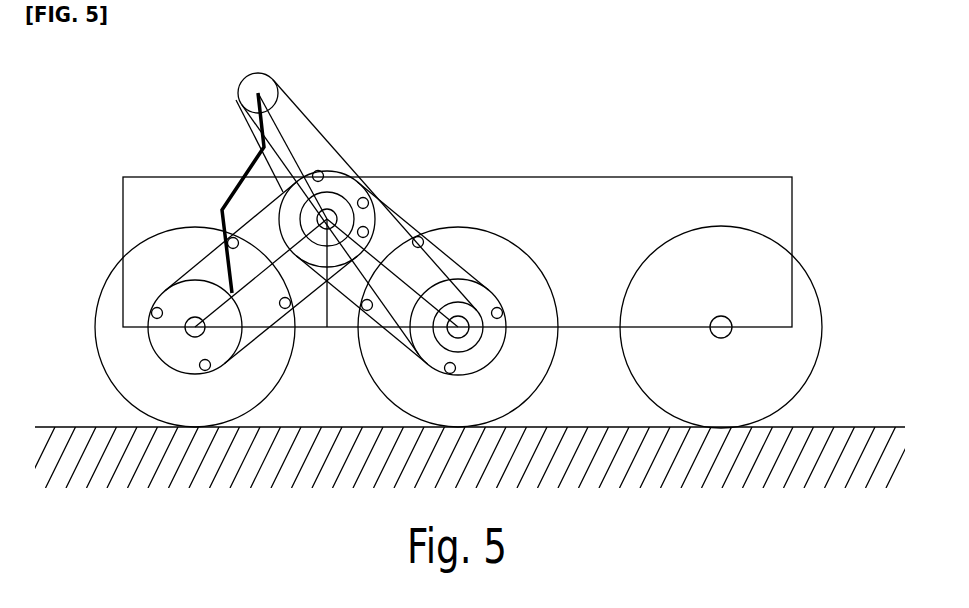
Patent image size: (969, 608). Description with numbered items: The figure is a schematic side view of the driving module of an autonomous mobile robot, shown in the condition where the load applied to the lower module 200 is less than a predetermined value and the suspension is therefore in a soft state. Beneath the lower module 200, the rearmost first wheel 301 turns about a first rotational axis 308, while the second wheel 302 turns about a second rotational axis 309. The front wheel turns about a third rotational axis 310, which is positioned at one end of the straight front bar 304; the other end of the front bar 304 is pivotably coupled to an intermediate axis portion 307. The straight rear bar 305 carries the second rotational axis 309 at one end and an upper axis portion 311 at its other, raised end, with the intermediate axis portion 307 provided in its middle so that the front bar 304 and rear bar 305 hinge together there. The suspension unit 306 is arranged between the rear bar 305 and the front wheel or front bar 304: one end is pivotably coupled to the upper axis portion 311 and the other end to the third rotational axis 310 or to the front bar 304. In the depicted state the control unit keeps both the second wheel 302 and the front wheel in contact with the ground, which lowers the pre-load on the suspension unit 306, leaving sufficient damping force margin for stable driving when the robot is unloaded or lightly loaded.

The lower module 200 is at (662, 188).
The first wheel 301 is at (787, 348).
The second wheel 302 is at (135, 355).
The front bar 304 is at (213, 261).
The rear bar 305 is at (326, 150).
The suspension unit 306 is at (233, 178).
The intermediate axis portion 307 is at (305, 216).
The first rotational axis 308 is at (724, 317).
The second rotational axis 309 is at (446, 343).
The third rotational axis 310 is at (148, 338).
The upper axis portion 311 is at (238, 91).